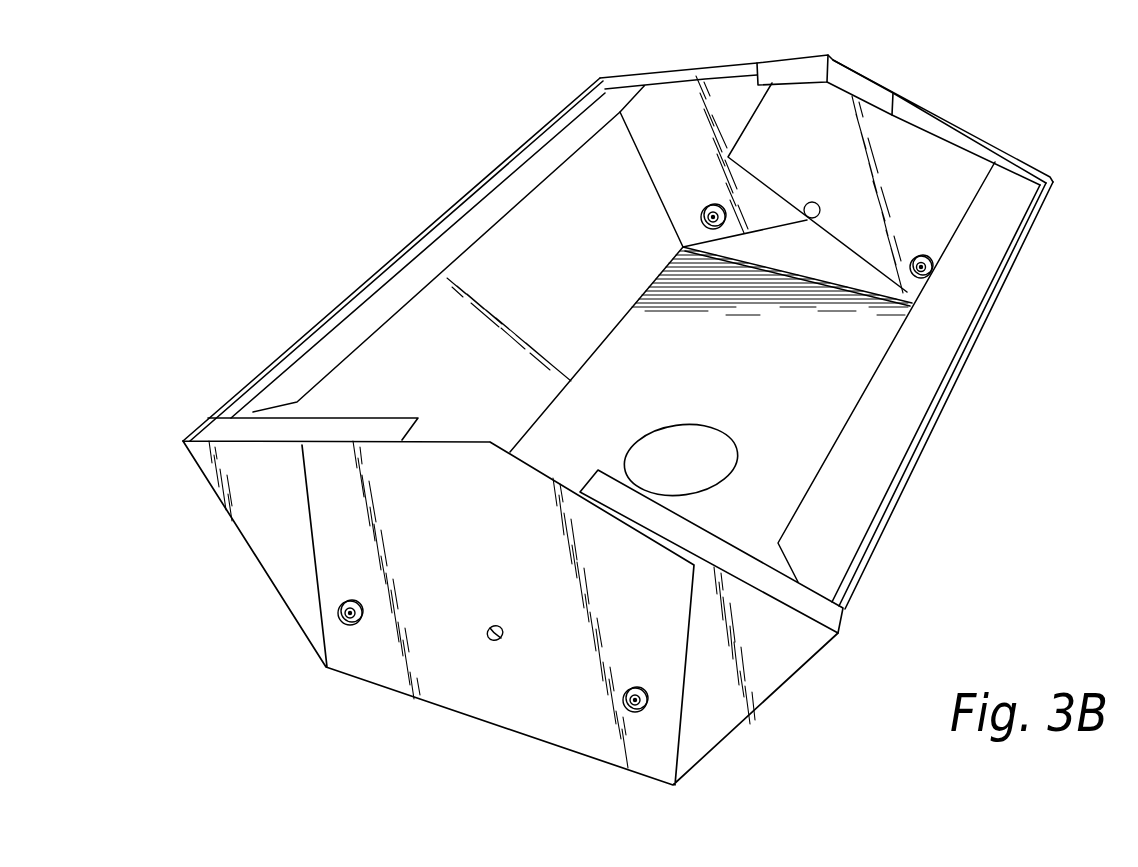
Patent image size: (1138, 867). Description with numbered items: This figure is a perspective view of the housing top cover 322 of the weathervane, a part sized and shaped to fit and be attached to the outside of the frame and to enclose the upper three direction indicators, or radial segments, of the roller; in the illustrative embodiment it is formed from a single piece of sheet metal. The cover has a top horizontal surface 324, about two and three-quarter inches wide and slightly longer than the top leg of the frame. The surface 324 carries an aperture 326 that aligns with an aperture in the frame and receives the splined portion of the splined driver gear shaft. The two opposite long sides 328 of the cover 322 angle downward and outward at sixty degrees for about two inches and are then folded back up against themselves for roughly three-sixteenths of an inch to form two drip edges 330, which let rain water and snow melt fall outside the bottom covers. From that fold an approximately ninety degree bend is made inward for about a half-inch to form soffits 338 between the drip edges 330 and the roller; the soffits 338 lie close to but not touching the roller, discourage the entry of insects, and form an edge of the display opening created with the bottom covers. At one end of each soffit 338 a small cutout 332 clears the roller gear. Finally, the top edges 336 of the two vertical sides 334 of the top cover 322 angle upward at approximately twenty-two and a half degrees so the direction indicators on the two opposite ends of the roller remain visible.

The top cover 322 is at (990, 115).
The top horizontal surface 324 is at (792, 427).
The aperture 326 is at (687, 467).
The long sides 328 is at (580, 177).
The drip edges 330 is at (440, 217).
The cutout 332 is at (288, 417).
The vertical sides 334 is at (673, 103).
The top edges 336 is at (877, 77).
The soffits 338 is at (412, 285).